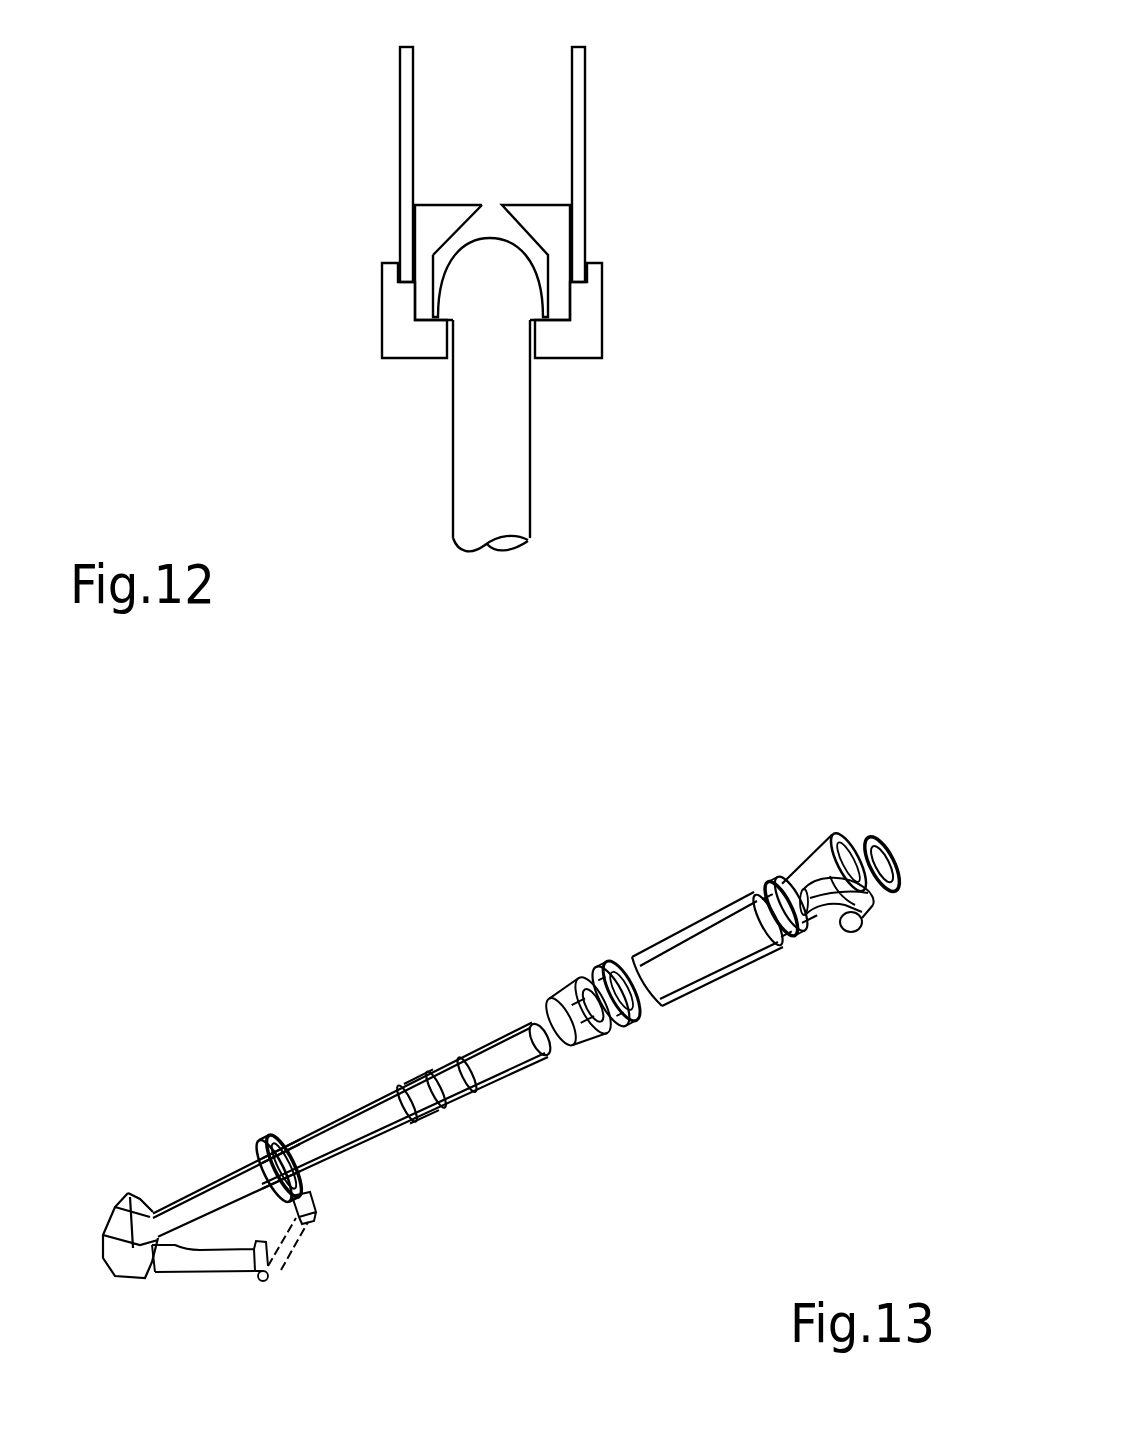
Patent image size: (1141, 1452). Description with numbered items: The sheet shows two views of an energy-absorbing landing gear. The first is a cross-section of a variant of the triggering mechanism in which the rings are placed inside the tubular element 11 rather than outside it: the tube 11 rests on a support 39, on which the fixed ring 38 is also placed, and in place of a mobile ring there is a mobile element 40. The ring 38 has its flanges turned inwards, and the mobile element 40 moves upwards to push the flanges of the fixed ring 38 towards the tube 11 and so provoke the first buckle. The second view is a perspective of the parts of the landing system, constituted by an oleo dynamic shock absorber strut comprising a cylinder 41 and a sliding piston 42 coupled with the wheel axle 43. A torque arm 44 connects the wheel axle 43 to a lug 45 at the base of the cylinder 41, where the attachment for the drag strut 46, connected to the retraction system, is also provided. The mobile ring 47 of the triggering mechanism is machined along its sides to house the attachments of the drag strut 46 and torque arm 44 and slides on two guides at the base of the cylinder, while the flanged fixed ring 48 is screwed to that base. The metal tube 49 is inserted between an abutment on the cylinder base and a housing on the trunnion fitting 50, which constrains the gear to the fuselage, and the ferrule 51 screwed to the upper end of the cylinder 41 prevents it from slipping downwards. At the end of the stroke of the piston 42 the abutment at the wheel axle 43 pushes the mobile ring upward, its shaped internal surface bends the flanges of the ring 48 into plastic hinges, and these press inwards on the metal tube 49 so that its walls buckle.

In FIG. 12, the tubular element 11 is at (577, 122).
In FIG. 12, the fixed ring 38 is at (578, 225).
In FIG. 12, the support 39 is at (585, 332).
In FIG. 12, the mobile element 40 is at (515, 477).
In FIG. 13, the cylinder 41 is at (358, 1103).
In FIG. 13, the sliding piston 42 is at (190, 1193).
In FIG. 13, the wheel axle 43 is at (128, 1197).
In FIG. 13, the torque arm 44 is at (273, 1257).
In FIG. 13, the lug 45 is at (310, 1200).
In FIG. 13, the drag strut 46 is at (252, 1143).
In FIG. 13, the mobile ring 47 is at (590, 1050).
In FIG. 13, the flanged fixed ring 48 is at (645, 1015).
In FIG. 13, the metal tube 49 is at (750, 967).
In FIG. 13, the trunnion fitting 50 is at (870, 893).
In FIG. 13, the ferrule 51 is at (910, 870).